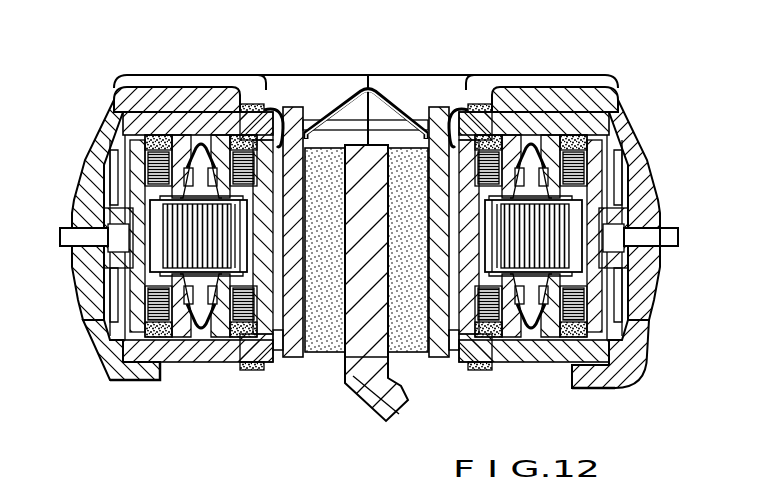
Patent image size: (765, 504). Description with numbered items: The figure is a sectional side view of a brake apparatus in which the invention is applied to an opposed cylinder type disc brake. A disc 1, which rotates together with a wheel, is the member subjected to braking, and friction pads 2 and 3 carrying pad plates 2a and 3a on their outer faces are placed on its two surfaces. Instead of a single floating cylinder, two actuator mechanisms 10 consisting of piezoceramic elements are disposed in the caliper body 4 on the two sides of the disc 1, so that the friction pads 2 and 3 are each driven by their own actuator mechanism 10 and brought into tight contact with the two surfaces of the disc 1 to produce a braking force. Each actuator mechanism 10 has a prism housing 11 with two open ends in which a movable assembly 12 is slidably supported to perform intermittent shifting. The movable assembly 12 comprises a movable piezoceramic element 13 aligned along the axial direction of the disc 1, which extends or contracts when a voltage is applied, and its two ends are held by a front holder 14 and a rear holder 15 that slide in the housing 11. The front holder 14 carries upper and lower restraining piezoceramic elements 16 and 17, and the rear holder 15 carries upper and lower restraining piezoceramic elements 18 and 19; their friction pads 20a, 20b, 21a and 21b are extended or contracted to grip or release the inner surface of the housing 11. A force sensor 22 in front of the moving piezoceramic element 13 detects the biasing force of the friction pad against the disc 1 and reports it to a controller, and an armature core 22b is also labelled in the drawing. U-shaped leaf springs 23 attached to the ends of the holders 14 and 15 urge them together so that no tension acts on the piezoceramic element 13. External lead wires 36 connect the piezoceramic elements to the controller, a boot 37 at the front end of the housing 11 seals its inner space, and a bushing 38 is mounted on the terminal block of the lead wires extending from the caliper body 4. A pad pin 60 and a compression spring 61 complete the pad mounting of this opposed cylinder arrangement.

The disc 1 is at (348, 383).
The friction pad 2 is at (407, 357).
The pad plate 2a is at (433, 360).
The friction pad 3 is at (325, 352).
The pad plate 3a is at (290, 357).
The caliper body 4 is at (160, 100).
The actuator mechanism 10 is at (212, 103).
The prism housing 11 is at (115, 118).
The movable assembly 12 is at (123, 148).
The movable piezoceramic element 13 is at (143, 268).
The front holder 14 is at (212, 362).
The rear holder 15 is at (130, 340).
The restraining piezoceramic element 16 is at (271, 137).
The restraining piezoceramic element 17 is at (263, 363).
The restraining piezoceramic element 18 is at (145, 168).
The restraining piezoceramic element 19 is at (138, 328).
The friction pad 20a is at (234, 147).
The friction pad 20b is at (478, 373).
The friction pad 21a is at (130, 88).
The friction pad 21b is at (145, 380).
The force sensor 22 is at (170, 250).
The armature core 22b is at (235, 370).
The U-shaped leaf spring 23 is at (200, 135).
The external lead wire 36 is at (680, 247).
The boot 37 is at (258, 108).
The bushing 38 is at (72, 220).
The pad pin 60 is at (393, 127).
The compression spring 61 is at (368, 75).